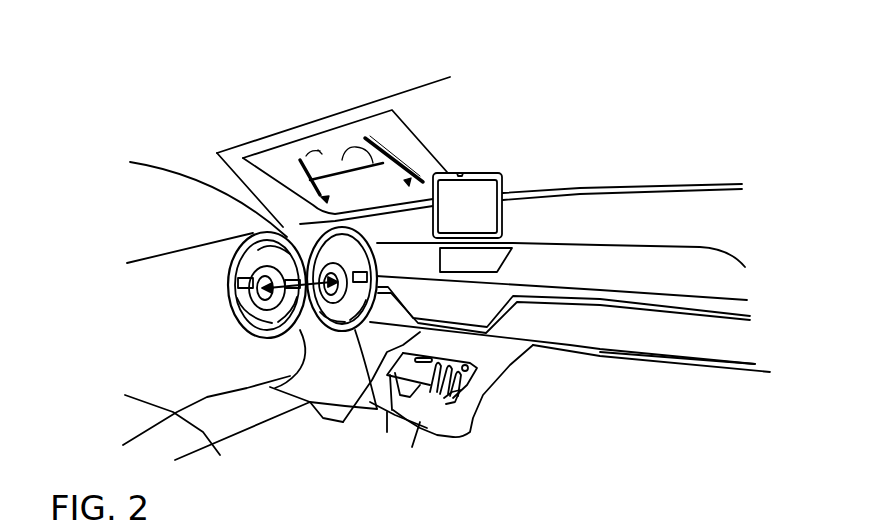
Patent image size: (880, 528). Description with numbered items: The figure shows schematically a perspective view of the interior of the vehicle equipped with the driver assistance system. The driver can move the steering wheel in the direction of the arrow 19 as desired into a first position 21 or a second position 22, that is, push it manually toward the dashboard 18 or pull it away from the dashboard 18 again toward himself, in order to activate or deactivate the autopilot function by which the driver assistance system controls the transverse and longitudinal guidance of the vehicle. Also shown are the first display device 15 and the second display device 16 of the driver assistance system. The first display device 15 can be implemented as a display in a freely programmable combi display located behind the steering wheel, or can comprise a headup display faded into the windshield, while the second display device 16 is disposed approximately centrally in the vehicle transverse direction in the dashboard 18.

The first display device 15 is at (343, 247).
The second display device 16 is at (497, 176).
The dashboard 18 is at (663, 212).
The arrow 19 is at (280, 290).
The first position 21 is at (255, 235).
The second position 22 is at (313, 232).